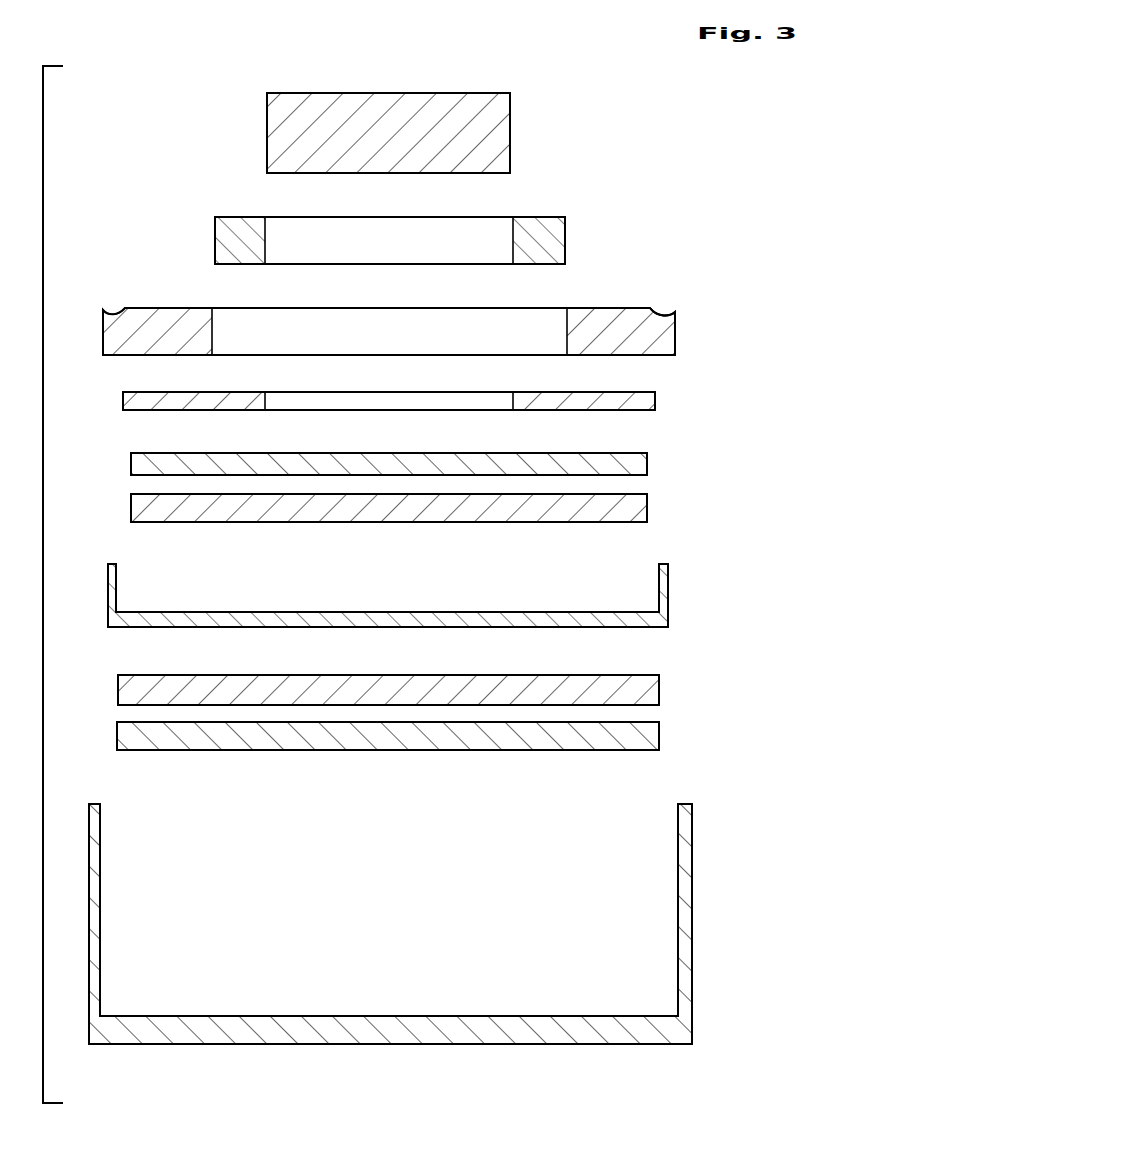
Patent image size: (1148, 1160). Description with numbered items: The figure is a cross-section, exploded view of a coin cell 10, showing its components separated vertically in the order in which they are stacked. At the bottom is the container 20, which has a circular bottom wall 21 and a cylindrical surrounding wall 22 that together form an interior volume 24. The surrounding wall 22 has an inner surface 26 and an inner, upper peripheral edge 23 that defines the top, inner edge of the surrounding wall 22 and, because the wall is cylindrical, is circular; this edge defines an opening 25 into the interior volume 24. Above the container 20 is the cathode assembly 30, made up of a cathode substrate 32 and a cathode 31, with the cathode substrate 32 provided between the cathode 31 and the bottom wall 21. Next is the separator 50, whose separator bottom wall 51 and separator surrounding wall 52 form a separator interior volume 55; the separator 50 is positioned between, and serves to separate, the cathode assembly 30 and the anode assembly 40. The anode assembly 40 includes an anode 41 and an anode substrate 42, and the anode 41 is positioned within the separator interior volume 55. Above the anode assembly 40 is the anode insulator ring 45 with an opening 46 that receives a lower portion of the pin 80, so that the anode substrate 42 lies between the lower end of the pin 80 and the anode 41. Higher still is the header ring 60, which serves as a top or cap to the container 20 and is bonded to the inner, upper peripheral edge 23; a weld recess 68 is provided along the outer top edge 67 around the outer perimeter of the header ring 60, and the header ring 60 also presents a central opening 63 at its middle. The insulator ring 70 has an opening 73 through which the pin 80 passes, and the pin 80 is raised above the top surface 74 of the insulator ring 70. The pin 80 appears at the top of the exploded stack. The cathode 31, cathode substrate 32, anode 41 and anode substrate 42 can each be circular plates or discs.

The coin cell 10 is at (212, 76).
The pin 80 is at (503, 132).
The top surface 74 is at (538, 217).
The opening 73 is at (299, 226).
The insulator ring 70 is at (566, 240).
The weld recess 68 is at (665, 310).
The outer top edge 67 is at (679, 310).
The opening 63 is at (371, 326).
The header ring 60 is at (678, 335).
The opening 46 is at (301, 403).
The anode insulator ring 45 is at (656, 405).
The anode assembly 40 is at (748, 538).
The anode substrate 42 is at (644, 464).
The anode 41 is at (644, 508).
The separator surrounding wall 52 is at (107, 588).
The separator interior volume 55 is at (414, 597).
The separator 50 is at (669, 597).
The separator bottom wall 51 is at (172, 618).
The cathode 31 is at (661, 685).
The cathode substrate 32 is at (661, 735).
The cathode assembly 30 is at (753, 630).
The inner, upper peripheral edge 23 is at (677, 812).
The opening 25 is at (416, 831).
The interior volume 24 is at (416, 916).
The container 20 is at (703, 940).
The surrounding wall 22 is at (690, 990).
The inner surface 26 is at (100, 983).
The bottom wall 21 is at (413, 1034).